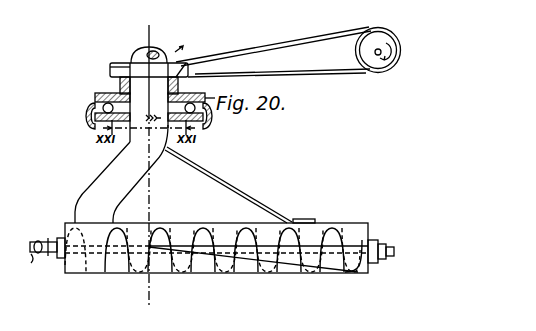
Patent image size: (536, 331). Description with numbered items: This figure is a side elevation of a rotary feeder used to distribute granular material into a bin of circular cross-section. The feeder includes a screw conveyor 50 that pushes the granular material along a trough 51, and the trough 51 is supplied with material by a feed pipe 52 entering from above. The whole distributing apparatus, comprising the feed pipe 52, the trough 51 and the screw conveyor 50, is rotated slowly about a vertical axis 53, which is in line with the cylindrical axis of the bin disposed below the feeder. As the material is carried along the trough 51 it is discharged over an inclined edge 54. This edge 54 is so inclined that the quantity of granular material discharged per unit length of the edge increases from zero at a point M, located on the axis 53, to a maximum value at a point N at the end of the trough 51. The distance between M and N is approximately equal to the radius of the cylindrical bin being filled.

The screw conveyor 50 is at (65, 222).
The trough 51 is at (283, 216).
The feed pipe 52 is at (156, 170).
The vertical axis 53 is at (149, 283).
The inclined edge 54 is at (290, 273).
The point M on the axis M is at (148, 247).
The point N at the end of the trough N is at (367, 271).